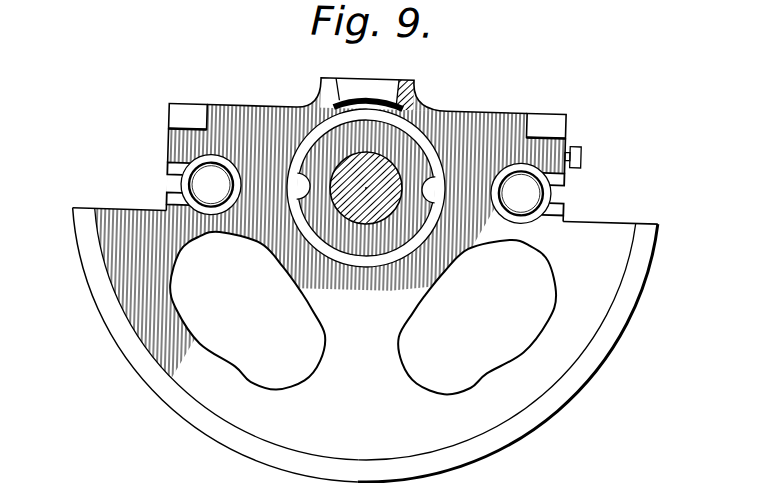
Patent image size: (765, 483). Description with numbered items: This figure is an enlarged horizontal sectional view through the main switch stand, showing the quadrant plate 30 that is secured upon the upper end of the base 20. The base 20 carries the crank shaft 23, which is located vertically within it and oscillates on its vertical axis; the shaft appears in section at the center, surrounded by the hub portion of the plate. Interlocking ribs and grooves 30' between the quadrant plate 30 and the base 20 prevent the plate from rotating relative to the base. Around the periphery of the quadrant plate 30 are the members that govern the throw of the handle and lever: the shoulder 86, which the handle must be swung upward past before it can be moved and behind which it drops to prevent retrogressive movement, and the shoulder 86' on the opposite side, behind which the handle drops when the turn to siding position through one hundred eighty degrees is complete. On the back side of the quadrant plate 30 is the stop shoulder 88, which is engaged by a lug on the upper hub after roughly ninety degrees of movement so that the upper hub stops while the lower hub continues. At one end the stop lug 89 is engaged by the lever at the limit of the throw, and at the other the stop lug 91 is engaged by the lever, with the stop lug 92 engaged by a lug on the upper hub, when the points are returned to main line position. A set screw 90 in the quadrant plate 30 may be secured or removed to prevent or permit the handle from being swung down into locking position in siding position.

The base 20 is at (380, 240).
The crank shaft 23 is at (361, 217).
The quadrant plate 30 is at (367, 276).
The interlocking ribs and grooves 30' is at (361, 135).
The shoulder 86 is at (215, 327).
The shoulder 86' is at (516, 333).
The stop shoulder 88 is at (411, 80).
The stop lug 89 is at (546, 113).
The set screw 90 is at (581, 149).
The stop lug 91 is at (180, 122).
The stop lug 92 is at (329, 88).